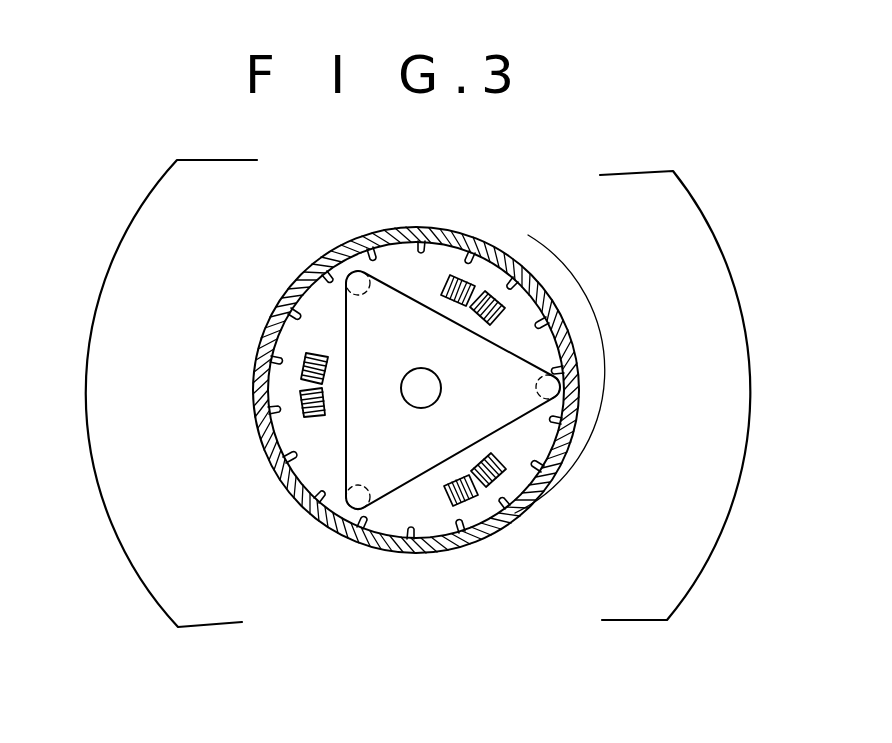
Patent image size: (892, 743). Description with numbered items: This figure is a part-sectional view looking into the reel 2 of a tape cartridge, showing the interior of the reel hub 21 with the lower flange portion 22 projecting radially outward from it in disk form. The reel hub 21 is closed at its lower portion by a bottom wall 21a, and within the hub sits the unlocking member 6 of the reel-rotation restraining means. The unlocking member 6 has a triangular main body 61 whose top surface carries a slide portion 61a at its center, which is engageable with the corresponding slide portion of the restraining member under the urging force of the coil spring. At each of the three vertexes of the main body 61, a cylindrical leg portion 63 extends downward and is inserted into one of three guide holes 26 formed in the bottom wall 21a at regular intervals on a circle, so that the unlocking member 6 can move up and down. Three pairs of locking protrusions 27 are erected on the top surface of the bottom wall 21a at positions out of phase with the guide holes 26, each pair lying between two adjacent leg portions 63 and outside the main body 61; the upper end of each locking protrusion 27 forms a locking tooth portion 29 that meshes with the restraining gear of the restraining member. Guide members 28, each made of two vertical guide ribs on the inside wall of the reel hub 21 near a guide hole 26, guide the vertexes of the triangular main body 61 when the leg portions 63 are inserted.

The reel 2 is at (133, 213).
The lower flange portion 22 is at (690, 213).
The reel hub 21 is at (447, 232).
The bottom wall 21a is at (527, 443).
The leg portions 63 is at (328, 262).
The guide members 28 is at (330, 284).
The unlocking member 6 is at (403, 288).
The main body 61 is at (347, 336).
The slide portion 61a is at (410, 407).
The guide holes 26 is at (362, 270).
The locking protrusions 27 is at (484, 290).
The locking tooth portion 29 is at (480, 318).